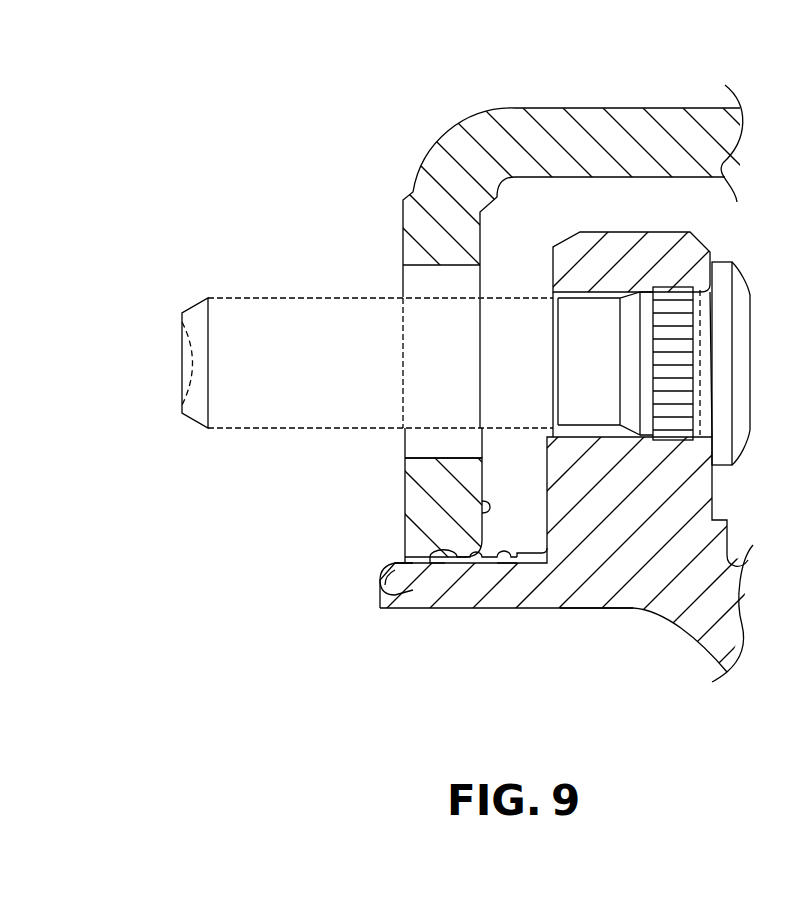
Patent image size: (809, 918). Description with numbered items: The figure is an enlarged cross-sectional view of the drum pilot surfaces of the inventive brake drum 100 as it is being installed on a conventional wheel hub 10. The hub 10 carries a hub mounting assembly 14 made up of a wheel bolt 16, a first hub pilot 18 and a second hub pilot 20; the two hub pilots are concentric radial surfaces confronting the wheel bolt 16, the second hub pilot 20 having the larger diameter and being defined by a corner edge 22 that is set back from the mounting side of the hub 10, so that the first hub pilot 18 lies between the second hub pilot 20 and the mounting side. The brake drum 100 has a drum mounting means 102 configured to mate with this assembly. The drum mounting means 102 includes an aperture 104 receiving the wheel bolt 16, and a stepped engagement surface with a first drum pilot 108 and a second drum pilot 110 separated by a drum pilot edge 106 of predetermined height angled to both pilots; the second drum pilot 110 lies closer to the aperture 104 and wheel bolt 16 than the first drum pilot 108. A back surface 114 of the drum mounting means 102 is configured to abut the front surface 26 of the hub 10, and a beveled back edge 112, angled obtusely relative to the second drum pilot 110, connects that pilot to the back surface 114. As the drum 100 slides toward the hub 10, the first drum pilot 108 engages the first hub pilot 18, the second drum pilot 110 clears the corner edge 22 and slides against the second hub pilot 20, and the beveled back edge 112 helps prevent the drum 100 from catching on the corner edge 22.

The wheel hub 10 is at (655, 668).
The hub mounting assembly 14 is at (540, 525).
The wheel bolt 16 is at (308, 322).
The first hub pilot 18 is at (457, 575).
The second hub pilot 20 is at (573, 587).
The corner edge 22 is at (523, 575).
The front surface 26 is at (560, 470).
The brake drum 100 is at (632, 74).
The drum mounting means 102 is at (380, 484).
The aperture 104 is at (405, 441).
The drum pilot edge 106 is at (405, 598).
The first drum pilot 108 is at (380, 583).
The second drum pilot 110 is at (455, 575).
The beveled back edge 112 is at (477, 544).
The back surface 114 is at (490, 508).